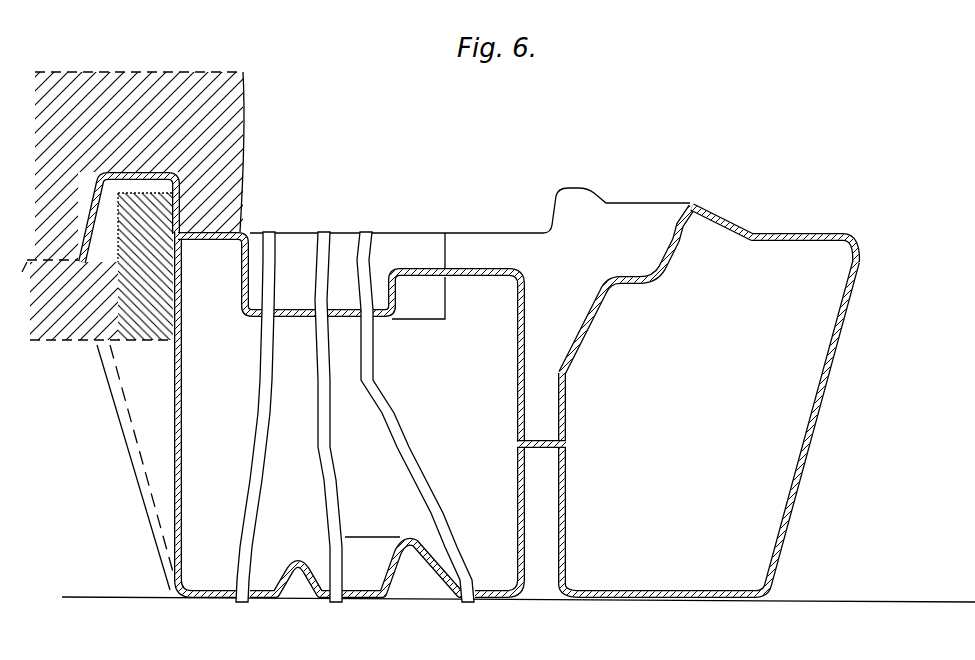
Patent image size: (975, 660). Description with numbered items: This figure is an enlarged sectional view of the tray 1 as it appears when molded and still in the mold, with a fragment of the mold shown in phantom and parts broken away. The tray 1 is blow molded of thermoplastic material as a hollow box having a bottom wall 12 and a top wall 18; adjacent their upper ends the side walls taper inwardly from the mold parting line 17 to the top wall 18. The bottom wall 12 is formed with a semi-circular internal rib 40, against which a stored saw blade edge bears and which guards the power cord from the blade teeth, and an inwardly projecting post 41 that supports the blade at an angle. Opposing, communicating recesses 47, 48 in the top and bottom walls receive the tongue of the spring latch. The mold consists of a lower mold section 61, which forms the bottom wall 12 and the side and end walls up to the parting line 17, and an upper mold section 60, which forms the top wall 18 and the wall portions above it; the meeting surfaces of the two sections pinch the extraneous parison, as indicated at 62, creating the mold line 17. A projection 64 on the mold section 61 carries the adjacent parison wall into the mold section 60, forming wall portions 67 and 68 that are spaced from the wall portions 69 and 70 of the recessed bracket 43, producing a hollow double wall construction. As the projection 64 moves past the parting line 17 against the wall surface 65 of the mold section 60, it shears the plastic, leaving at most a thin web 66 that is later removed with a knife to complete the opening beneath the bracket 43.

The tray 1 is at (848, 155).
The bottom wall 12 is at (630, 601).
The mold parting line 17 is at (864, 268).
The top wall 18 is at (367, 232).
The internal rib 40 is at (407, 538).
The post 41 is at (300, 561).
The recessed bracket 43 is at (185, 165).
The recess 47 is at (586, 322).
The recess 48 is at (563, 515).
The mold section 60 is at (173, 82).
The mold section 61 is at (70, 345).
The pinched parison portions 62 is at (33, 344).
The projection 64 is at (183, 228).
The wall surface 65 is at (185, 222).
The web 66 is at (185, 236).
The wall portion 67 is at (180, 125).
The wall portion 68 is at (45, 262).
The wall portion of bracket formation 69 is at (97, 192).
The wall portion of bracket formation 70 is at (68, 228).